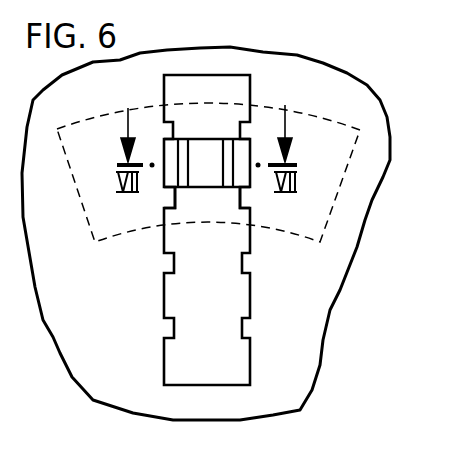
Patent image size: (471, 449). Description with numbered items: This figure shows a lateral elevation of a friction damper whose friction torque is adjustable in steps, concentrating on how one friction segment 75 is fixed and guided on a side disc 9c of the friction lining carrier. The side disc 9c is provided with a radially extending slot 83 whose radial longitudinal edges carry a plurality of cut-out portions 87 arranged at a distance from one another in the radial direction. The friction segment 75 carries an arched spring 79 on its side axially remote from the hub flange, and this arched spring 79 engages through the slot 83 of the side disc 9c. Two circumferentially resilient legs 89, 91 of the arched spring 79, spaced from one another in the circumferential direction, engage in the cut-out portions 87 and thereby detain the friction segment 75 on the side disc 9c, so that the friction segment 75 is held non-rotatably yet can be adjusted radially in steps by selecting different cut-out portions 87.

The side disc 9c is at (307, 366).
The friction segment 75 is at (317, 118).
The radially extending slot 83 is at (237, 300).
The arched spring 79 is at (212, 150).
The circumferentially resilient leg 91 is at (183, 172).
The circumferentially resilient leg 89 is at (228, 173).
The cut-out portions 87 is at (165, 243).